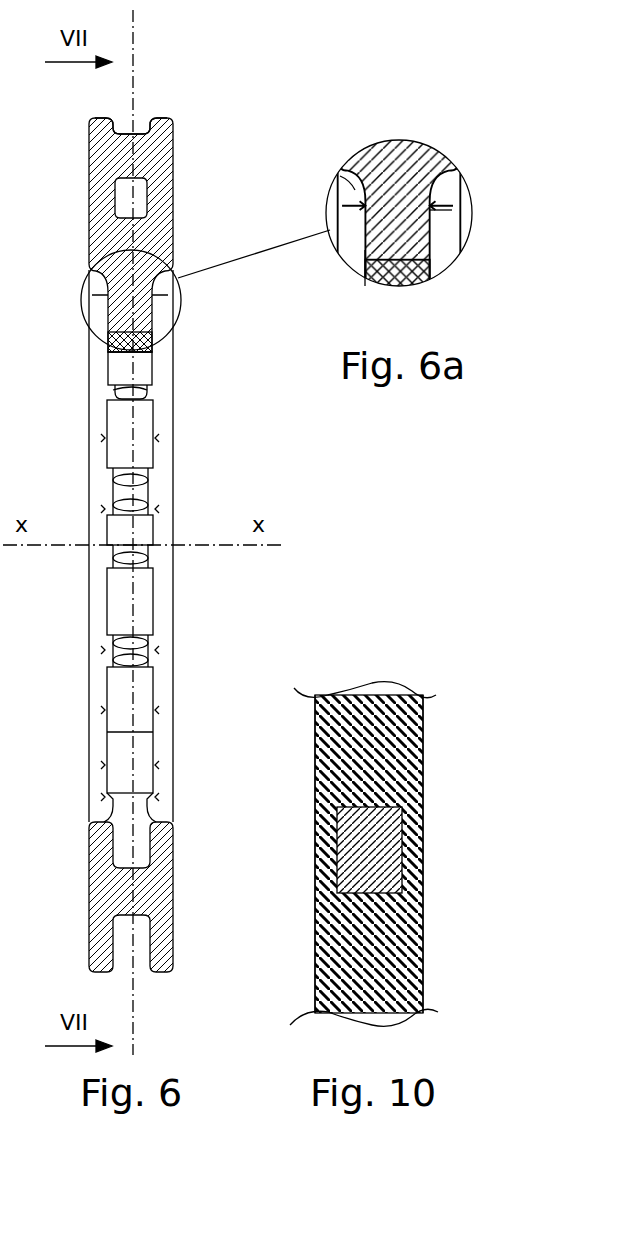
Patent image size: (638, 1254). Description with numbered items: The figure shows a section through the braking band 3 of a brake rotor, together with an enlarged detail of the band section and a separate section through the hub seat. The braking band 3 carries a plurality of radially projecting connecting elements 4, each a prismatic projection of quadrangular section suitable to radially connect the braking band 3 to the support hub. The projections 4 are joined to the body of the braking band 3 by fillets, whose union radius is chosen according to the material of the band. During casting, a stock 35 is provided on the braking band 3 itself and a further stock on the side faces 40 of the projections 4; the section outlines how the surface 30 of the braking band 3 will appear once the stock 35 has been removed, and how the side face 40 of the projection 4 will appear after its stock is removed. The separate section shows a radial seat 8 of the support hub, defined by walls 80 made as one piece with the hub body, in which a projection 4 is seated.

In FIG. 6, the braking band 3 is at (241, 104).
In FIG. 6, the connecting element 4 is at (136, 338).
In FIG. 6, the surface of the braking band 30 is at (170, 243).
In FIG. 6, the stock 35 is at (174, 124).
In FIG. 6, the side face 40 is at (150, 322).
In FIG. 10, the radial seat 8 is at (342, 812).
In FIG. 10, the wall 80 is at (402, 807).